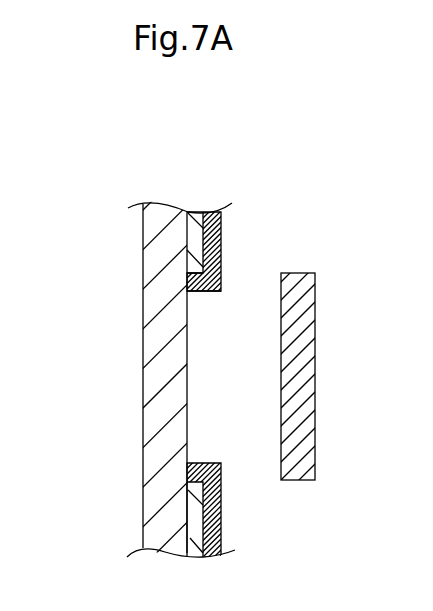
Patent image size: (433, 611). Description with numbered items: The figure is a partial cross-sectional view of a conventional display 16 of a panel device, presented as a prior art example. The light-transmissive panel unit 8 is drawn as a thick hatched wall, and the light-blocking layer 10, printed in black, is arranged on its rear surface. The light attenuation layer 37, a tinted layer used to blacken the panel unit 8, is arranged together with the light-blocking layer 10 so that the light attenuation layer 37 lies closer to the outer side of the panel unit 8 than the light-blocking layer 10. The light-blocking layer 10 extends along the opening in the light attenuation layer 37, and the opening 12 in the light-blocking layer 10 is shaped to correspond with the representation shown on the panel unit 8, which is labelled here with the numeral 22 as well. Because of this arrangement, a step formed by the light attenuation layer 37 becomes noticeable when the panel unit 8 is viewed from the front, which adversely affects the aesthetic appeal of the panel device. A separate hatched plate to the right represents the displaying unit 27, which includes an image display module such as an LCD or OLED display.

The display 16 is at (104, 175).
The panel unit 8 is at (143, 270).
The light-blocking layer 10 is at (222, 218).
The light attenuation layer 37 is at (197, 212).
The opening 12 is at (211, 292).
The end portion 22 is at (204, 282).
The displaying unit 27 is at (297, 273).